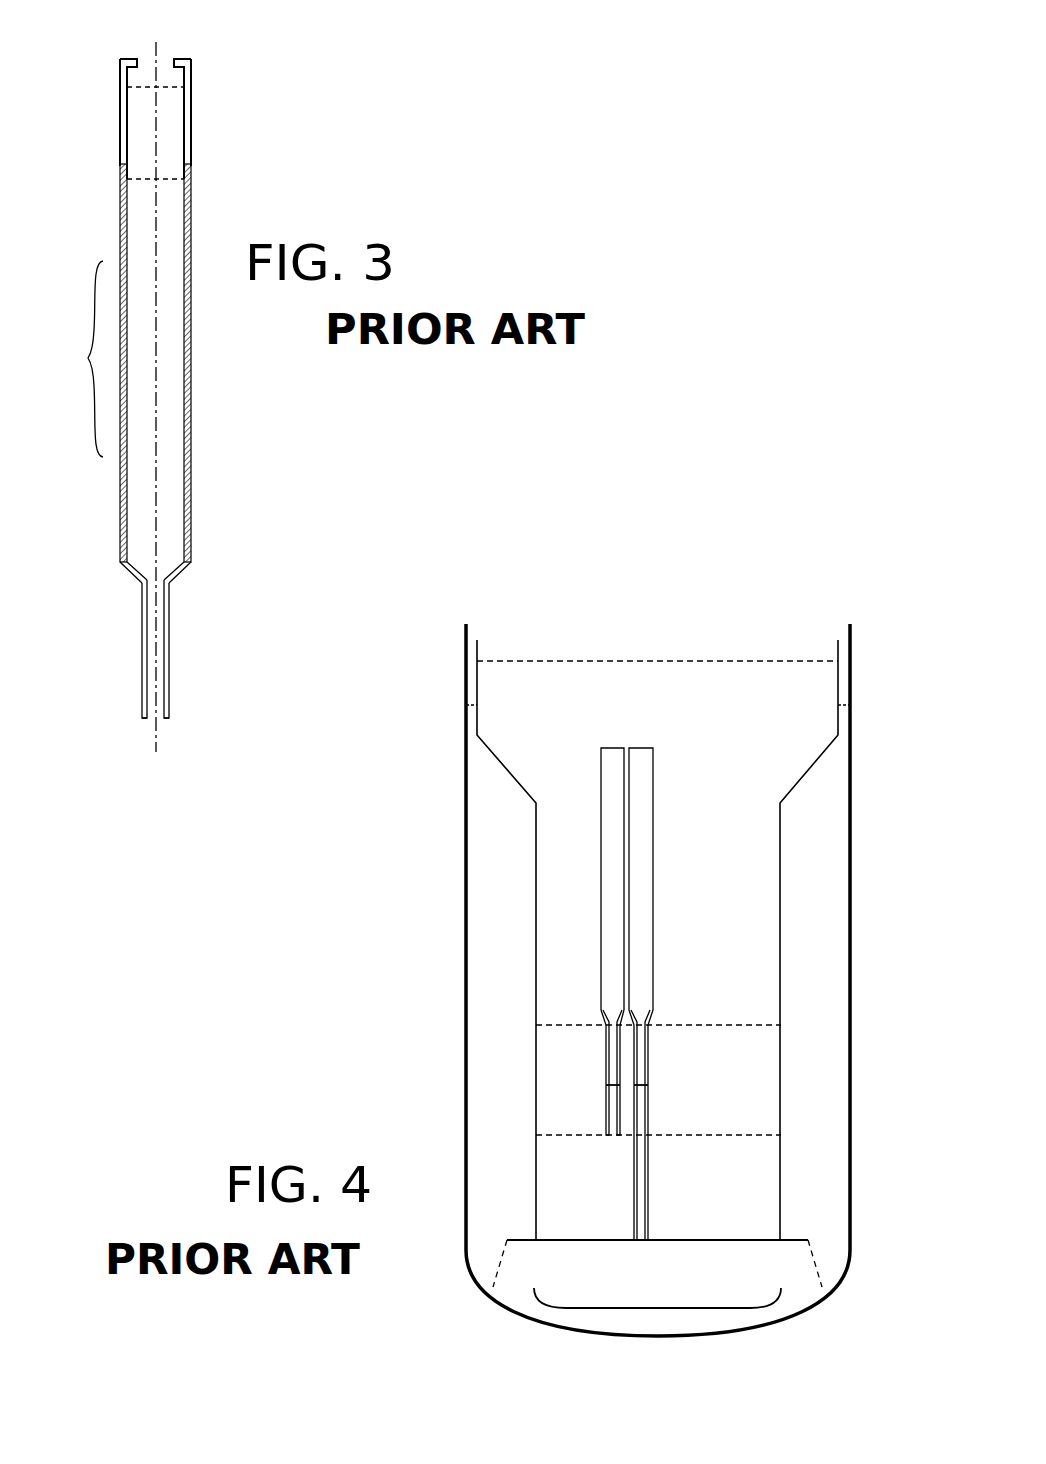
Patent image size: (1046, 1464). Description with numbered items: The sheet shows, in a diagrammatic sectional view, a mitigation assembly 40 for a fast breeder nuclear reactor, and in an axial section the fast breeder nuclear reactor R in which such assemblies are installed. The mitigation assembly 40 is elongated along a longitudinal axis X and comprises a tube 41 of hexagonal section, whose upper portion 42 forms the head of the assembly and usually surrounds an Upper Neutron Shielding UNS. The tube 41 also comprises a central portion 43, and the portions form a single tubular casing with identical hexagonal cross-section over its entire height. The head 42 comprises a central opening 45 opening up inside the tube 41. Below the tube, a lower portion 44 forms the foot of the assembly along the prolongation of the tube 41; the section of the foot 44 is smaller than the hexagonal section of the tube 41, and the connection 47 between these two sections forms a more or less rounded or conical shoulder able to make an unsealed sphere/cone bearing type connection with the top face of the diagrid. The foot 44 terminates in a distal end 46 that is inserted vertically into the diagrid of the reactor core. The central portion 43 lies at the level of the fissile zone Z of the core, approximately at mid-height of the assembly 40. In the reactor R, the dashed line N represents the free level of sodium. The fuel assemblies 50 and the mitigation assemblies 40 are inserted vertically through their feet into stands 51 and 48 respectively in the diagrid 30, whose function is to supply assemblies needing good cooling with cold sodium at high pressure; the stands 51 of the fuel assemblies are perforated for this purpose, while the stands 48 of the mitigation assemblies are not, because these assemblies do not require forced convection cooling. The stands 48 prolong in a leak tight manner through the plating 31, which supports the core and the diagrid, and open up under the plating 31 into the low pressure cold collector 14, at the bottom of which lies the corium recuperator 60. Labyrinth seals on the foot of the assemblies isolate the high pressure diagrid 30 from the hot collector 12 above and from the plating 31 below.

In FIG. 3, the mitigation assembly 40 is at (163, 382).
In FIG. 4, the mitigation assembly 40 is at (640, 927).
In FIG. 3, the tube 41 is at (150, 363).
In FIG. 3, the upper portion 42 is at (187, 75).
In FIG. 3, the central portion 43 is at (120, 470).
In FIG. 3, the lower portion 44 is at (167, 637).
In FIG. 3, the central opening 45 is at (165, 61).
In FIG. 3, the tip / outlet end 46 is at (137, 718).
In FIG. 3, the connection 47 is at (133, 577).
In FIG. 3, the Upper Neutron Shielding UNS is at (168, 146).
In FIG. 3, the fissile zone Z is at (82, 359).
In FIG. 3, the longitudinal axis X is at (157, 740).
In FIG. 4, the hot collector 12 is at (776, 686).
In FIG. 4, the free level of sodium N is at (727, 660).
In FIG. 4, the fast breeder nuclear reactor R is at (615, 966).
In FIG. 4, the cold collector 14 is at (506, 976).
In FIG. 4, the diagrid 30 is at (547, 1093).
In FIG. 4, the plating 31 is at (562, 1197).
In FIG. 4, the stand 48 is at (649, 1112).
In FIG. 4, the fuel assembly 50 is at (612, 859).
In FIG. 4, the stand 51 is at (606, 1117).
In FIG. 4, the corium recuperator 60 is at (698, 1310).